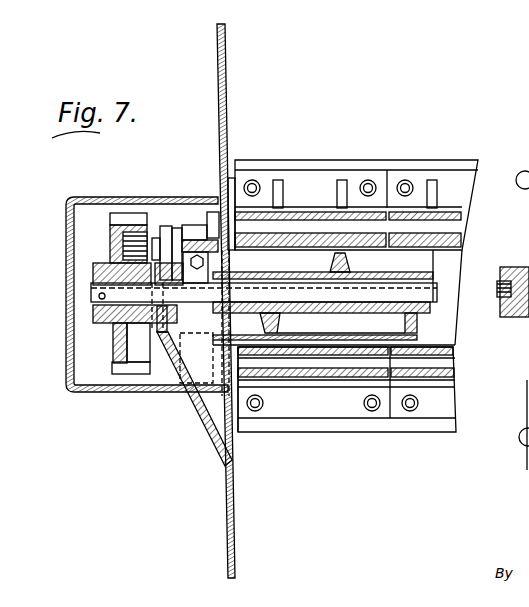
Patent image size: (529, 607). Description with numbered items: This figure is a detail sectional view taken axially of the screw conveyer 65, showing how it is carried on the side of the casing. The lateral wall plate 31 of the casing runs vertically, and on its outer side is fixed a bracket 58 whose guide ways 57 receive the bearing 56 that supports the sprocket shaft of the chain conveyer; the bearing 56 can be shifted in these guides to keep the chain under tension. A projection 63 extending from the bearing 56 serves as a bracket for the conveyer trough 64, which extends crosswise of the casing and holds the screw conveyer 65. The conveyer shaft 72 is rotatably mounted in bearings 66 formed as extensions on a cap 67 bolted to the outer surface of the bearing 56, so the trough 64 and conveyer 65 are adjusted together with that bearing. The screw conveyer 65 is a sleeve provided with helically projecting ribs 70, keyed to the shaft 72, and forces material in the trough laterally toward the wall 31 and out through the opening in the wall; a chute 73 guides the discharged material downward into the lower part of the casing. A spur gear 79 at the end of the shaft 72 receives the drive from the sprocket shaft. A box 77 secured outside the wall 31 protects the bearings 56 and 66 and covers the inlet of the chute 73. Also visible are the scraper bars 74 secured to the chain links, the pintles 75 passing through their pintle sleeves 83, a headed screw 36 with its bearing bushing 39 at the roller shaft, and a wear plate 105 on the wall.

The lateral wall plate 31 is at (227, 82).
The headed screw 36 is at (499, 289).
The bearing bushing 39 is at (528, 262).
The bearing 56 is at (186, 226).
The guide way 57 is at (200, 225).
The bracket 58 is at (200, 212).
The projection 63 is at (166, 240).
The conveyer trough 64 is at (440, 334).
The screw conveyer 65 is at (420, 320).
The bearing 66 is at (152, 326).
The cap 67 is at (156, 232).
The helically projecting rib 70 is at (278, 313).
The conveyer shaft 72 is at (96, 308).
The chute 73 is at (208, 430).
The scraper bar 74 is at (446, 160).
The pintle 75 is at (462, 220).
The box 77 is at (80, 390).
The spur gear 79 is at (156, 335).
The pintle sleeve 83 is at (306, 208).
The wear plate 105 is at (231, 176).